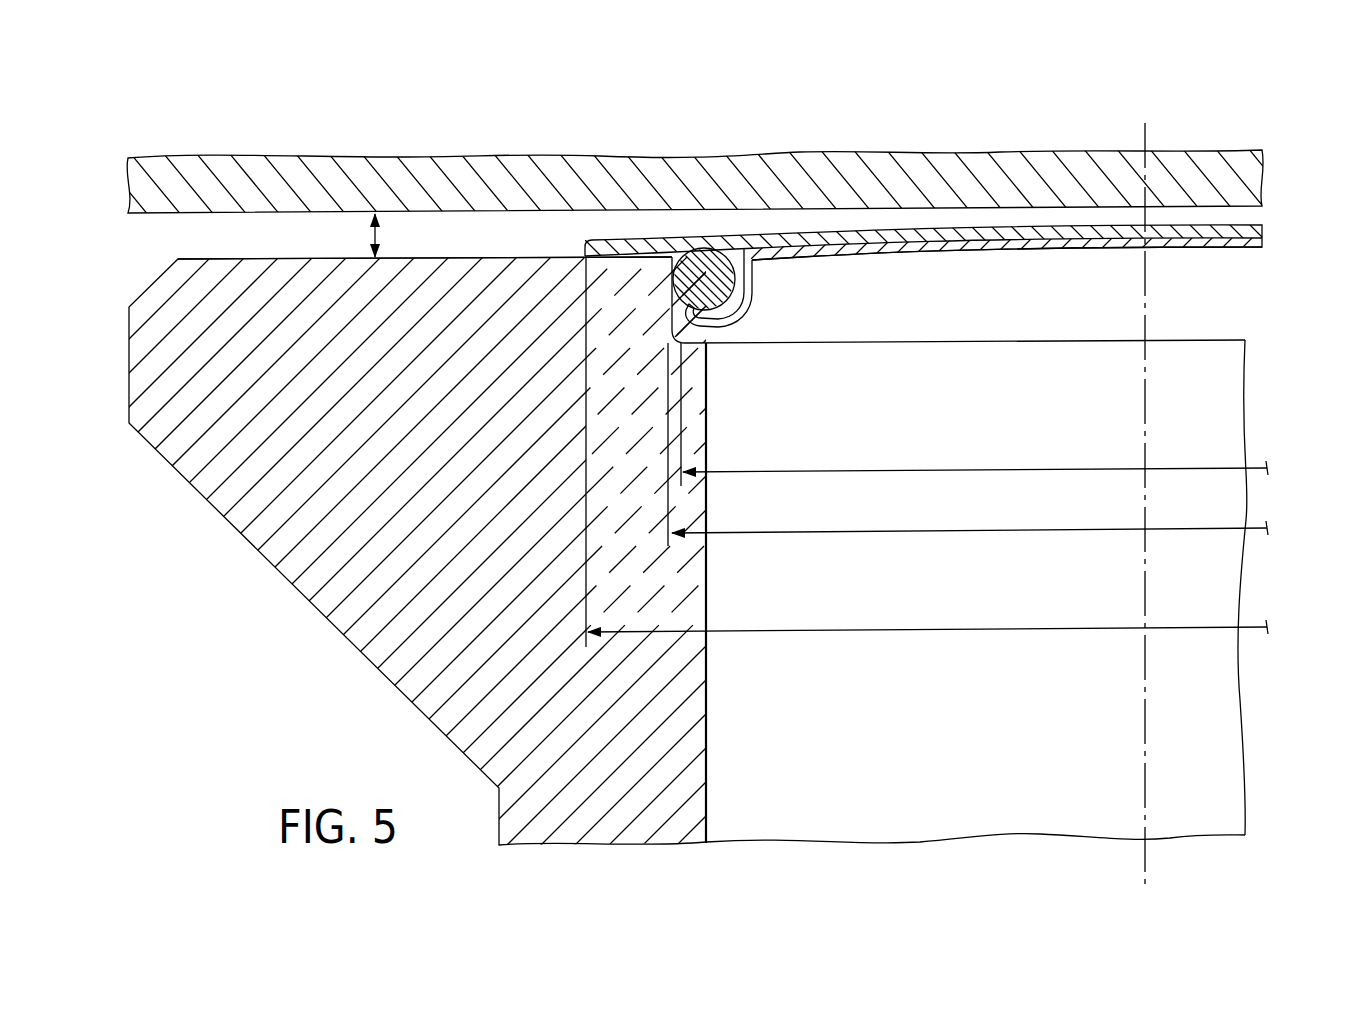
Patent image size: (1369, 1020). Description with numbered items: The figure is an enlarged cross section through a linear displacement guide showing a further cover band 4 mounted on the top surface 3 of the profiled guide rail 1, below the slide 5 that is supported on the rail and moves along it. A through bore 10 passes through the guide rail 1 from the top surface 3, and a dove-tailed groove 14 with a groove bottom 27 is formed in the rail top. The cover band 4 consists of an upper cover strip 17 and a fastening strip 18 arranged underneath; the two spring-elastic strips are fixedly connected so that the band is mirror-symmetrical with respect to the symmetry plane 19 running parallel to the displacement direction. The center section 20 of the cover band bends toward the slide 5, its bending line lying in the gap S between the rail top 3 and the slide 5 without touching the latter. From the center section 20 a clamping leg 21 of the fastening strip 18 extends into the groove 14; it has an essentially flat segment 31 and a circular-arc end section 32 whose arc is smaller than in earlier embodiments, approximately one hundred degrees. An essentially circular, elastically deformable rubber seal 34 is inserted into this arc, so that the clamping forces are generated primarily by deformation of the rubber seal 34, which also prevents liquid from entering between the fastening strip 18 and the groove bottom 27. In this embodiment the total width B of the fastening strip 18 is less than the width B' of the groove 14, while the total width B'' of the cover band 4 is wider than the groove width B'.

The guide rail 1 is at (292, 596).
The top surface 3 is at (463, 257).
The cover band 4 is at (956, 220).
The slide 5 is at (229, 150).
The through bore 10 is at (966, 574).
The groove 14 is at (1235, 303).
The cover strip 17 is at (928, 225).
The fastening strip 18 is at (930, 252).
The symmetry plane 19 is at (1148, 133).
The center section 20 is at (1068, 250).
The clamping leg 21 is at (764, 324).
The groove bottom 27 is at (983, 342).
The flat segment 31 is at (752, 268).
The end section 32 is at (708, 326).
The rubber seal 34 is at (702, 272).
The gap S is at (373, 237).
The total width of the fastening strip B is at (974, 414).
The width of the groove B' is at (968, 444).
The total width of the cover band B'' is at (927, 452).